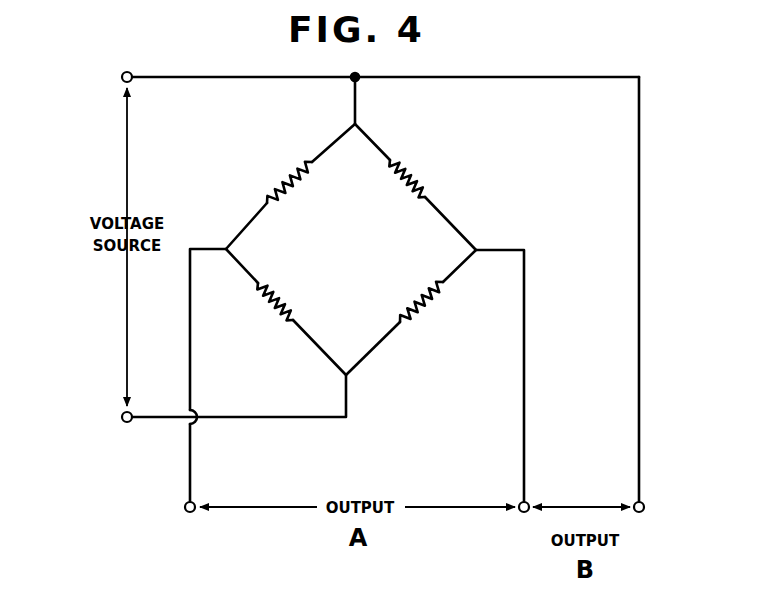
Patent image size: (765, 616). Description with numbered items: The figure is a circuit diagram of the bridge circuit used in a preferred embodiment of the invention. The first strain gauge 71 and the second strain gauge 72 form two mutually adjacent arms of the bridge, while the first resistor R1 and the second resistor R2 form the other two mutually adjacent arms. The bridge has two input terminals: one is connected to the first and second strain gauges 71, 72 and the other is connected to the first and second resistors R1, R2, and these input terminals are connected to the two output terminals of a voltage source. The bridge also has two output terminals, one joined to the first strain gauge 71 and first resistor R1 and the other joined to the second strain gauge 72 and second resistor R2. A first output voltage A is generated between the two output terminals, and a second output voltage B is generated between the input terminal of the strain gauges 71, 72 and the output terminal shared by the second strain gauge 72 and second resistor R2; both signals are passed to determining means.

The first strain gauge 71 is at (278, 181).
The second strain gauge 72 is at (420, 176).
The first resistor R1 is at (266, 314).
The second resistor R2 is at (429, 313).